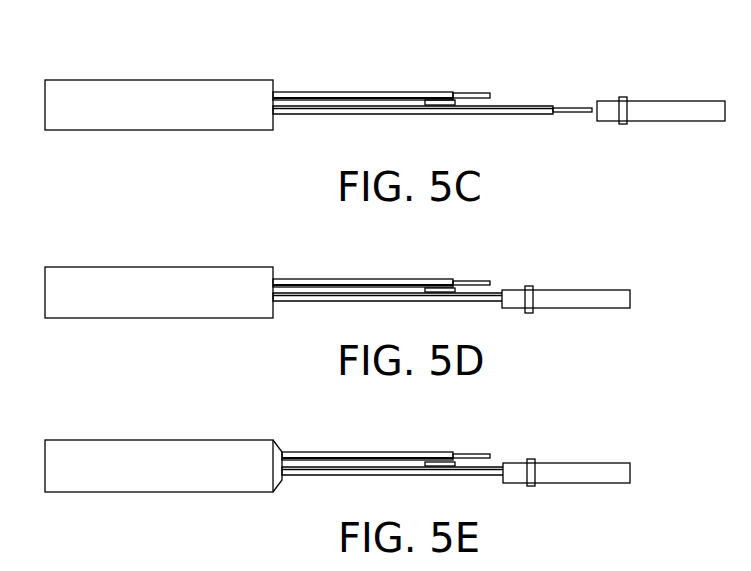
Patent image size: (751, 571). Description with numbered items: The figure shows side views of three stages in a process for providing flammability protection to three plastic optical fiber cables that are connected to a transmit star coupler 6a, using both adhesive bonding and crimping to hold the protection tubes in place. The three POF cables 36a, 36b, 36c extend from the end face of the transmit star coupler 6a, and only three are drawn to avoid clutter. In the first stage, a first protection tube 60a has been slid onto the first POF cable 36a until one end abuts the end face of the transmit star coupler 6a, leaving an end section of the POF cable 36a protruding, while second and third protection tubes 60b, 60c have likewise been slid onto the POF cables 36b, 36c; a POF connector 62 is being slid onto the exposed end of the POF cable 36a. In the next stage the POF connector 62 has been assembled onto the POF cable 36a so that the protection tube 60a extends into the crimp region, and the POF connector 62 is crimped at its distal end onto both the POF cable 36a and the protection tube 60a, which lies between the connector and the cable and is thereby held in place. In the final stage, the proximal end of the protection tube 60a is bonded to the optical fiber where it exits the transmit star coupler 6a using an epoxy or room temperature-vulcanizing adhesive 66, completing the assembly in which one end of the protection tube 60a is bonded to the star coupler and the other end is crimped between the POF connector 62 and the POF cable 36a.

In FIG. 5C, the transmit star coupler 6a is at (85, 80).
In FIG. 5D, the transmit star coupler 6a is at (88, 266).
In FIG. 5E, the transmit star coupler 6a is at (88, 440).
In FIG. 5C, the third protection tube 60c is at (370, 92).
In FIG. 5D, the third protection tube 60c is at (377, 279).
In FIG. 5E, the third protection tube 60c is at (373, 452).
In FIG. 5C, the second protection tube 60b is at (323, 107).
In FIG. 5D, the second protection tube 60b is at (323, 293).
In FIG. 5E, the second protection tube 60b is at (323, 468).
In FIG. 5C, the first protection tube 60a is at (527, 115).
In FIG. 5D, the first protection tube 60a is at (467, 303).
In FIG. 5E, the first protection tube 60a is at (480, 476).
In FIG. 5C, the third POF cable 36c is at (467, 93).
In FIG. 5D, the third POF cable 36c is at (480, 280).
In FIG. 5E, the third POF cable 36c is at (487, 455).
In FIG. 5C, the second POF cable 36b is at (445, 104).
In FIG. 5D, the second POF cable 36b is at (447, 288).
In FIG. 5E, the second POF cable 36b is at (443, 462).
In FIG. 5C, the first POF cable 36a is at (565, 106).
In FIG. 5C, the POF connector 62 is at (660, 121).
In FIG. 5D, the POF connector 62 is at (598, 308).
In FIG. 5E, the POF connector 62 is at (600, 483).
In FIG. 5E, the adhesive 66 is at (280, 481).